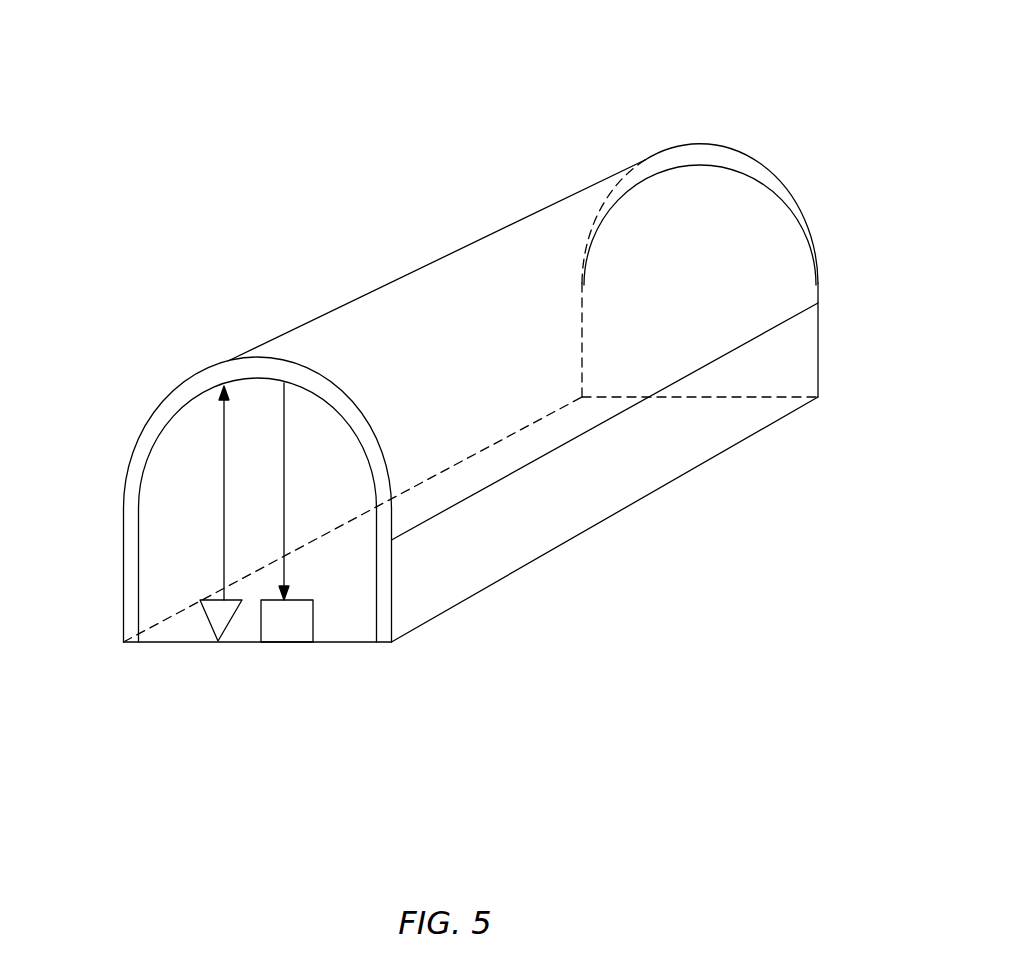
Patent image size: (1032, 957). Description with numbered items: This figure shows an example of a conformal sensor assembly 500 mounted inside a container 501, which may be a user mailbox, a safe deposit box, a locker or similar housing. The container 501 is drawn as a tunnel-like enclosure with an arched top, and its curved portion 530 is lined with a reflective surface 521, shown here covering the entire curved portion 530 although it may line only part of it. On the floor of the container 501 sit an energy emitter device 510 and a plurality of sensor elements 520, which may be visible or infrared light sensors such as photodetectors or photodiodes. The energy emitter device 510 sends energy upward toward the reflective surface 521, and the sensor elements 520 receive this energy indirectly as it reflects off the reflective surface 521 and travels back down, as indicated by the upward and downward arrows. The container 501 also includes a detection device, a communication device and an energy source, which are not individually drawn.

The conformal sensor assembly 500 is at (316, 92).
The container 501 is at (471, 240).
The energy emitter device 510 is at (217, 622).
The sensor elements 520 is at (297, 627).
The reflective surface 521 is at (326, 391).
The curved portion 530 is at (822, 250).